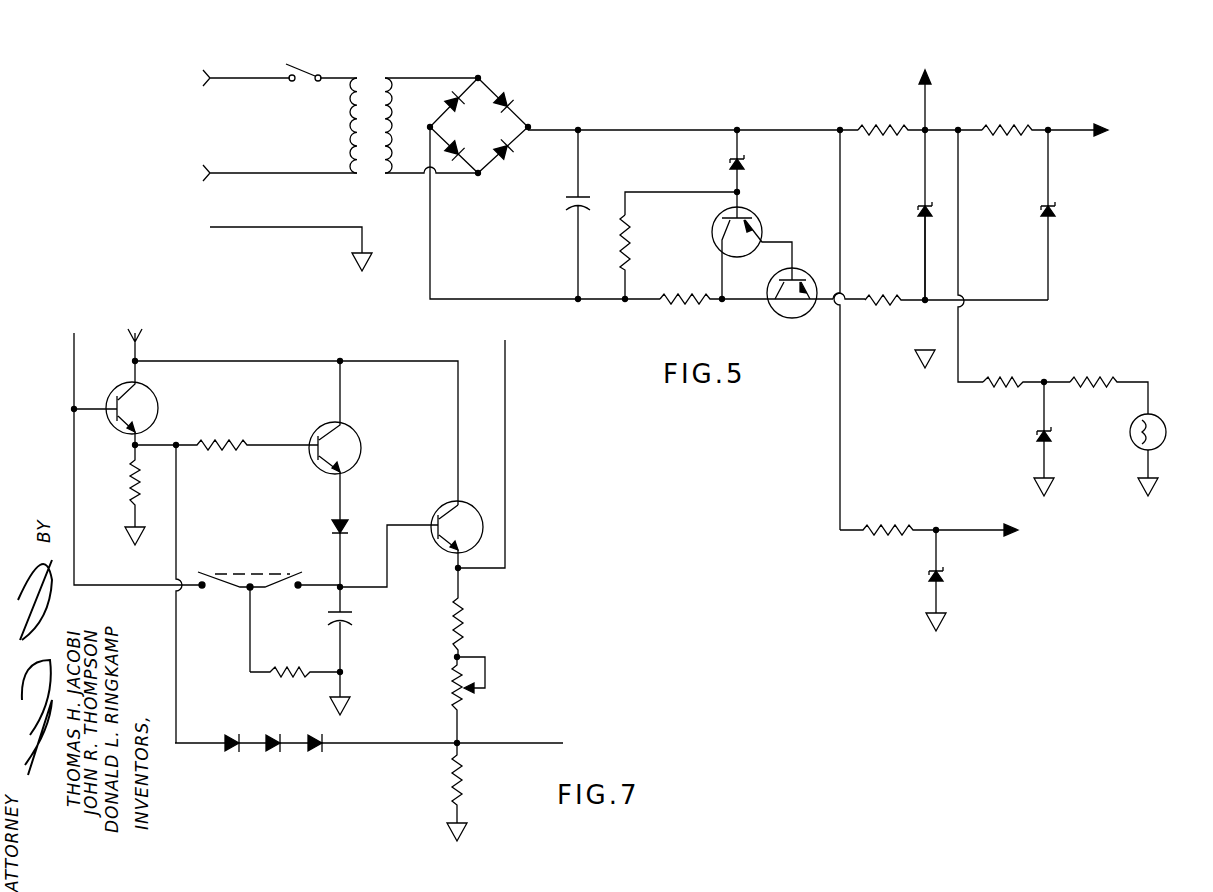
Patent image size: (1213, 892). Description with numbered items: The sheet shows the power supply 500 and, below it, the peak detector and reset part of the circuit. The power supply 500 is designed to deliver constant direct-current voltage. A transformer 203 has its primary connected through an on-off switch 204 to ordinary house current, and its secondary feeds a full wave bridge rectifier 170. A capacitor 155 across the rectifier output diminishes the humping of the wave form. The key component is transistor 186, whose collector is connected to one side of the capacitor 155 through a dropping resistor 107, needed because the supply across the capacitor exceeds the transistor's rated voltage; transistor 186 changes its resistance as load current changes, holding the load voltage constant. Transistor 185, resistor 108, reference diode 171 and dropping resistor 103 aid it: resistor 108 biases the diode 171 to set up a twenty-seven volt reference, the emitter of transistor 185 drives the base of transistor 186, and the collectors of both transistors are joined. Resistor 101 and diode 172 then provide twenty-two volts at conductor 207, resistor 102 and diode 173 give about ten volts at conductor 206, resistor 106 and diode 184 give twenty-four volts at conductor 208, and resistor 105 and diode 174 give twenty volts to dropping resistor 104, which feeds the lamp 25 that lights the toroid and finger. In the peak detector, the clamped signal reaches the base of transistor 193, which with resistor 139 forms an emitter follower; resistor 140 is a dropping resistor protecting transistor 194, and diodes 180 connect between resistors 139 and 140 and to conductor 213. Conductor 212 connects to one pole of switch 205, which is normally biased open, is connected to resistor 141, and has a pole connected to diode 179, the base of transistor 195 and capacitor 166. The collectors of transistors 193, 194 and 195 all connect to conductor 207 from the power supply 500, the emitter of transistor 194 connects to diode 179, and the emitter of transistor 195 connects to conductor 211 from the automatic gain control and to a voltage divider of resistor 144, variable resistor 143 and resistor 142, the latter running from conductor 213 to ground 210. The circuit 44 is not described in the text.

In FIG. 5, the on-off switch 204 is at (330, 58).
In FIG. 5, the transformer 203 is at (368, 78).
In FIG. 5, the full wave bridge rectifier 170 is at (493, 84).
In FIG. 5, the capacitor 155 is at (566, 203).
In FIG. 5, the power supply 500 is at (765, 112).
In FIG. 5, the reference diode 171 is at (748, 163).
In FIG. 5, the resistor 108 is at (632, 252).
In FIG. 5, the transistor 185 is at (760, 221).
In FIG. 5, the transistor 186 is at (770, 318).
In FIG. 5, the dropping resistor 107 is at (684, 310).
In FIG. 5, the dropping resistor 103 is at (875, 312).
In FIG. 5, the resistor 101 is at (895, 104).
In FIG. 5, the conductor 207 is at (933, 82).
In FIG. 7, the conductor 207 is at (142, 350).
In FIG. 5, the diode 172 is at (920, 224).
In FIG. 5, the resistor 102 is at (1008, 122).
In FIG. 5, the conductor 206 is at (1078, 126).
In FIG. 5, the diode 173 is at (1060, 214).
In FIG. 5, the resistor 105 is at (1002, 378).
In FIG. 5, the dropping resistor 104 is at (1096, 378).
In FIG. 5, the lamp 25 is at (1164, 420).
In FIG. 5, the diode 174 is at (1036, 440).
In FIG. 5, the resistor 106 is at (890, 526).
In FIG. 5, the conductor 208 is at (1010, 536).
In FIG. 5, the diode 184 is at (950, 576).
In FIG. 5, the ground 210 is at (355, 260).
In FIG. 7, the ground 210 is at (130, 540).
In FIG. 7, the conductor 212 is at (72, 348).
In FIG. 7, the oscillator circuit 44 is at (250, 354).
In FIG. 7, the transistor 193 is at (114, 437).
In FIG. 7, the resistor 139 is at (127, 482).
In FIG. 7, the resistor 140 is at (236, 442).
In FIG. 7, the transistor 194 is at (306, 466).
In FIG. 7, the diode 179 is at (328, 527).
In FIG. 7, the transistor 195 is at (452, 505).
In FIG. 7, the conductor 211 is at (507, 408).
In FIG. 7, the switch 205 is at (278, 556).
In FIG. 7, the capacitor 166 is at (360, 622).
In FIG. 7, the resistor 141 is at (280, 686).
In FIG. 7, the resistor 144 is at (468, 628).
In FIG. 7, the variable resistor 143 is at (470, 702).
In FIG. 7, the conductor 213 is at (530, 746).
In FIG. 7, the diodes 180 is at (228, 758).
In FIG. 7, the resistor 142 is at (468, 792).